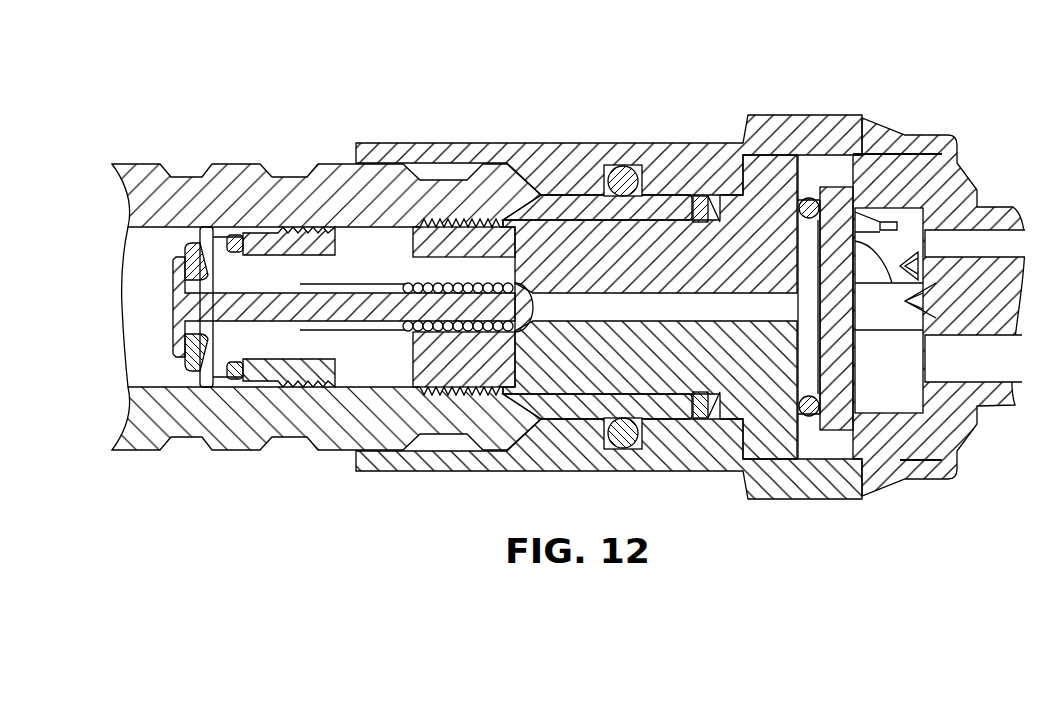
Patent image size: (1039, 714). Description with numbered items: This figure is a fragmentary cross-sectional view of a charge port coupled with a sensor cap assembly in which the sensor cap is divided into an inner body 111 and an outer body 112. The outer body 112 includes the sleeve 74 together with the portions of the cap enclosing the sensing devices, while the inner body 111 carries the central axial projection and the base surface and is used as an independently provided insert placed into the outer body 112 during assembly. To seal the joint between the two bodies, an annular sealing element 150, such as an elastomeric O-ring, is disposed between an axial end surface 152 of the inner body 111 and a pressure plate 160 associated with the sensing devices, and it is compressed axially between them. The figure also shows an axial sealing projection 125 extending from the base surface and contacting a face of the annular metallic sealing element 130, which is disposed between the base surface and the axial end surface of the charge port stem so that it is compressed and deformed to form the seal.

The sleeve 74 is at (545, 148).
The outer body 112 is at (600, 148).
The metallic sealing element 130 is at (660, 148).
The axial sealing projection 125 is at (712, 148).
The inner body 111 is at (772, 227).
The annular sealing element 150 is at (811, 200).
The axial end surface 152 is at (800, 372).
The pressure plate 160 is at (838, 200).